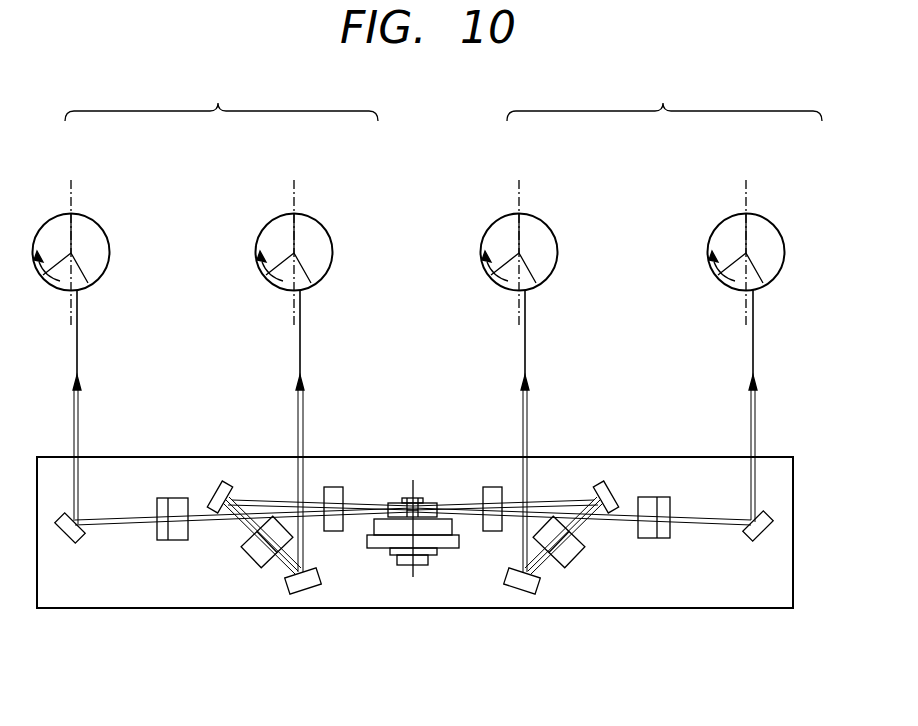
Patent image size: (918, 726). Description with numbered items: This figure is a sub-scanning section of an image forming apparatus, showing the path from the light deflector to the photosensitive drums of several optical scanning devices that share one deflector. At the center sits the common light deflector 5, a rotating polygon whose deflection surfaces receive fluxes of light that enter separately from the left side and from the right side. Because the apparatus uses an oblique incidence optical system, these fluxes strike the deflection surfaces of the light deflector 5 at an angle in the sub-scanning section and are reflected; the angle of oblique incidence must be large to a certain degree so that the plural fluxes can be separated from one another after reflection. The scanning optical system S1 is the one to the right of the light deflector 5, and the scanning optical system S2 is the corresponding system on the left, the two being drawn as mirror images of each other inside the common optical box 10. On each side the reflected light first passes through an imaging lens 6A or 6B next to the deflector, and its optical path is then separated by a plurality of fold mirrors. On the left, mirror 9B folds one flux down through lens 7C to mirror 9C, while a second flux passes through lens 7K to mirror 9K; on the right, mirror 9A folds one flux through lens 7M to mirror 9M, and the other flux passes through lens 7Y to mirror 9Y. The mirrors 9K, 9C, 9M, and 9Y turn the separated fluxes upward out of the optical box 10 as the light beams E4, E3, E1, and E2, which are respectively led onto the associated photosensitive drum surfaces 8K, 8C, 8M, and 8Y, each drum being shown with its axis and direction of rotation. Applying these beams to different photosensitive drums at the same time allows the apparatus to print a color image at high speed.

The light deflector 5 is at (397, 500).
The first imaging lens 6A is at (489, 492).
The first imaging lens 6B is at (335, 492).
The second imaging lens for black 7K is at (174, 497).
The second imaging lens for cyan 7C is at (268, 566).
The second imaging lens for magenta 7M is at (582, 549).
The second imaging lens for yellow 7Y is at (650, 496).
The photosensitive drum surface 8K is at (100, 222).
The photosensitive drum surface 8C is at (325, 222).
The photosensitive drum surface 8M is at (549, 222).
The photosensitive drum surface 8Y is at (776, 222).
The reflecting mirror for black 9K is at (66, 546).
The reflecting mirror 9B is at (216, 486).
The reflecting mirror for cyan 9C is at (310, 594).
The reflecting mirror 9A is at (597, 482).
The reflecting mirror for magenta 9M is at (517, 592).
The reflecting mirror for yellow 9Y is at (746, 535).
The optical box housing 10 is at (793, 548).
The light beam E1 is at (525, 361).
The light beam E2 is at (753, 356).
The light beam E3 is at (300, 352).
The light beam E4 is at (78, 355).
The scanning optical system S1 is at (664, 97).
The scanning optical system station S2 is at (221, 97).